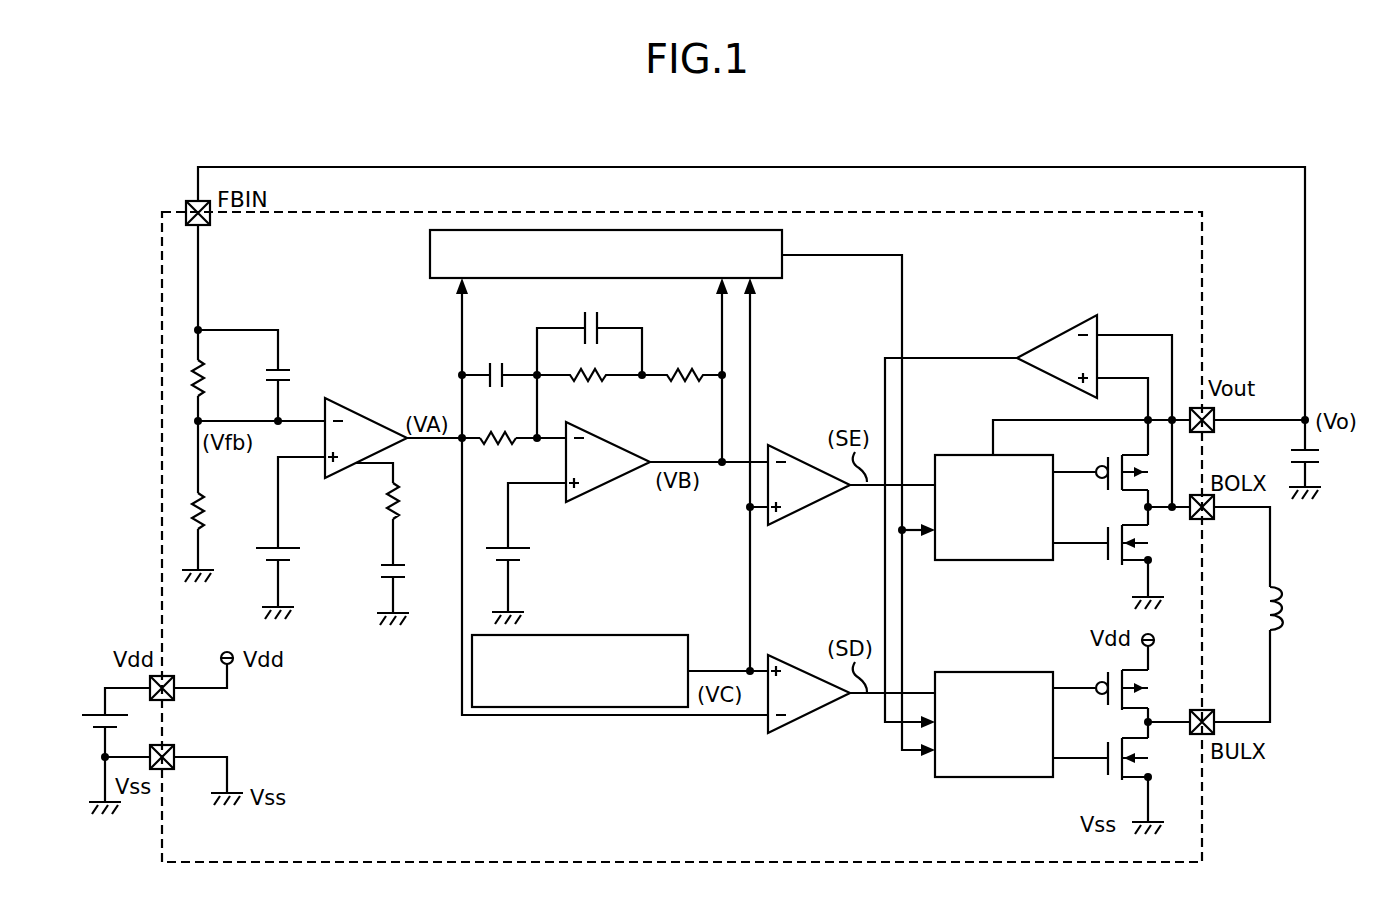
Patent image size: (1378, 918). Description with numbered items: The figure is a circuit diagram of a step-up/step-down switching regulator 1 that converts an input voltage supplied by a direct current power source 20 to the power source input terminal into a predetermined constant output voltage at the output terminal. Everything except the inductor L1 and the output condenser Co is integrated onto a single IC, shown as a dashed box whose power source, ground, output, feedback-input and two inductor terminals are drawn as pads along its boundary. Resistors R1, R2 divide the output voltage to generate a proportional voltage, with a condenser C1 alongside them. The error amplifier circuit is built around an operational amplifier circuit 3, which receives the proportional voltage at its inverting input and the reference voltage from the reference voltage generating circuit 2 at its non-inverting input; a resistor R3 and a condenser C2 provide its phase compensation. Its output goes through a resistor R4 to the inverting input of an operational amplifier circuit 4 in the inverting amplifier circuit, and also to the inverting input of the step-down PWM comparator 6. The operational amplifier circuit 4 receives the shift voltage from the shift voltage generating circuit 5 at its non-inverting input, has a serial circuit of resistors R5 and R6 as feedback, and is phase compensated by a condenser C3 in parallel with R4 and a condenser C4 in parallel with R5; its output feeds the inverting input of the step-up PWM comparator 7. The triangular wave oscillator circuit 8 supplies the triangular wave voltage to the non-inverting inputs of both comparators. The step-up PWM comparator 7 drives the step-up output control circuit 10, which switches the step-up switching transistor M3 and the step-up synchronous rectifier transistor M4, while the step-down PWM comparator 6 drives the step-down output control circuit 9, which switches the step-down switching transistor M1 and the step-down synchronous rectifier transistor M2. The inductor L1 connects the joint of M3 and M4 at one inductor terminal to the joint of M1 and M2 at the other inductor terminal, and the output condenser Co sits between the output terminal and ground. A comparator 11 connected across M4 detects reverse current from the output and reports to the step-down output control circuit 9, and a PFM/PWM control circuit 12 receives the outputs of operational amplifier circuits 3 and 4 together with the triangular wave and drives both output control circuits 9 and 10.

The step-up/step-down switching regulator 1 is at (924, 150).
The reference voltage generating circuit 2 is at (298, 552).
The operational amplifier circuit 3 is at (364, 410).
The operational amplifier circuit 4 is at (596, 484).
The shift voltage generating circuit 5 is at (528, 550).
The step-down PWM comparator 6 is at (801, 656).
The step-up PWM comparator 7 is at (804, 447).
The triangular wave oscillator circuit 8 is at (659, 634).
The step-down output control circuit 9 is at (954, 670).
The step-up output control circuit 10 is at (956, 454).
The comparator 11 is at (1058, 330).
The PFM/PWM control circuit 12 is at (430, 258).
The direct current power source 20 is at (86, 722).
The element IC is at (1210, 278).
The resistor R1 is at (217, 378).
The resistor R2 is at (217, 511).
The resistor R3 is at (414, 501).
The resistor R4 is at (498, 456).
The resistor R5 is at (589, 393).
The resistor R6 is at (682, 393).
The condenser C1 is at (256, 375).
The condenser C2 is at (406, 560).
The condenser C3 is at (499, 360).
The condenser C4 is at (589, 331).
The output condenser Co is at (1322, 459).
The step-down switching transistor M1 is at (1100, 686).
The step-down synchronous rectifier transistor M2 is at (1100, 756).
The step-up switching transistor M3 is at (1100, 540).
The step-up synchronous rectifier transistor M4 is at (1100, 468).
The inductor L1 is at (1299, 608).